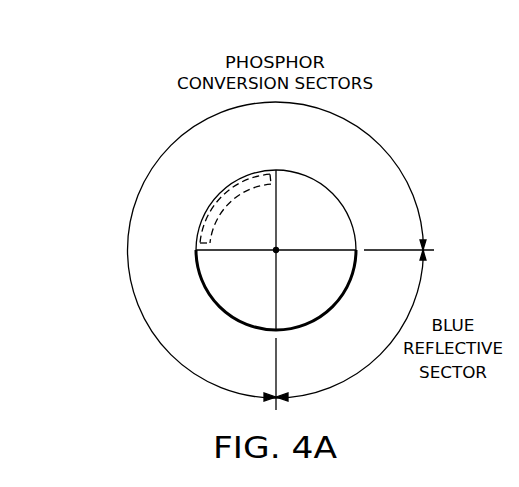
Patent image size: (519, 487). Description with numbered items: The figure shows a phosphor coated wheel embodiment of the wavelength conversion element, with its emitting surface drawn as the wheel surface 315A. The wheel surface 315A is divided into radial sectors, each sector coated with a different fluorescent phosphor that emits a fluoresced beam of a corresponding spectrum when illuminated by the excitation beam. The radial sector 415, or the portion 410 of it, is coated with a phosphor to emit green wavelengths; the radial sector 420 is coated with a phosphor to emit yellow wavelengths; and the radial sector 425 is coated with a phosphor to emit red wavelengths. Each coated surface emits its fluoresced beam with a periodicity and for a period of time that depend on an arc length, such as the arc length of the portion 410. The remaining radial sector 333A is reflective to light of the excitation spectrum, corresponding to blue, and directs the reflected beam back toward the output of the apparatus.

The wheel surface 315A is at (137, 100).
The portion 410 is at (235, 182).
The radial sector 415 is at (218, 252).
The radial sector 420 is at (318, 192).
The radial sector 425 is at (232, 309).
The radial sector 333A is at (315, 308).